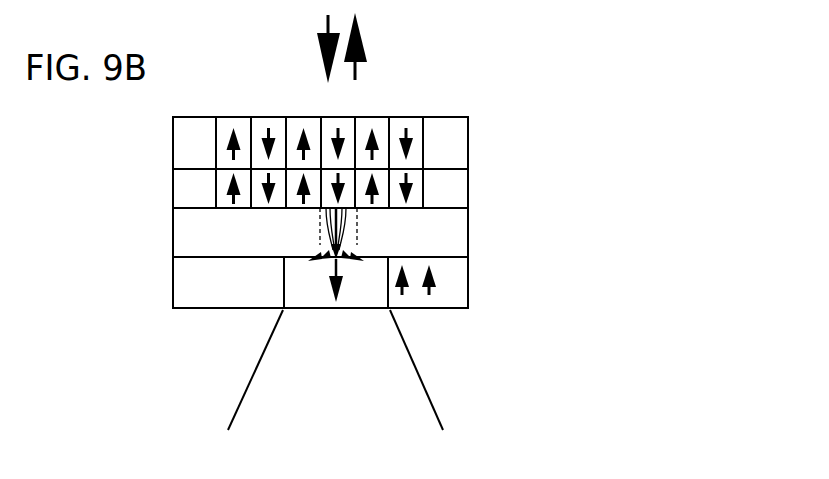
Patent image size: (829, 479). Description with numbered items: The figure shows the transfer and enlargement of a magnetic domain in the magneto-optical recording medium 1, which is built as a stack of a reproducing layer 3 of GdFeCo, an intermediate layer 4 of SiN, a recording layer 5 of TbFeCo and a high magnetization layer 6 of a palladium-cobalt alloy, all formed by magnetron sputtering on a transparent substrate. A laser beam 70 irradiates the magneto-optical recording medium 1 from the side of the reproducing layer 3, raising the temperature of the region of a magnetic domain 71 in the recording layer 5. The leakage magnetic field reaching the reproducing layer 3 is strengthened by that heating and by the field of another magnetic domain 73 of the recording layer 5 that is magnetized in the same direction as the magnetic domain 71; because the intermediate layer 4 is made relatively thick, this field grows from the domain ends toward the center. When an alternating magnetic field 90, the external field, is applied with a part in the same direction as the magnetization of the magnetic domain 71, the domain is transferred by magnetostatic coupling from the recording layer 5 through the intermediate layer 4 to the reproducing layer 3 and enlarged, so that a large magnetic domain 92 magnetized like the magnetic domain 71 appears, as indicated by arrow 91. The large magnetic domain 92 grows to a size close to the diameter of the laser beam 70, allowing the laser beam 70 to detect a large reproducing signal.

The magneto-optical recording medium 1 is at (473, 105).
The reproducing layer 3 is at (460, 289).
The intermediate layer 4 is at (460, 232).
The recording layer 5 is at (460, 191).
The high magnetization layer 6 is at (458, 146).
The laser beam 70 is at (420, 372).
The magnetic domain 71 is at (325, 178).
The another magnetic domain 73 is at (326, 125).
The alternating magnetic field 90 is at (363, 43).
The arrow 91 is at (343, 284).
The large magnetic domain 92 is at (300, 278).